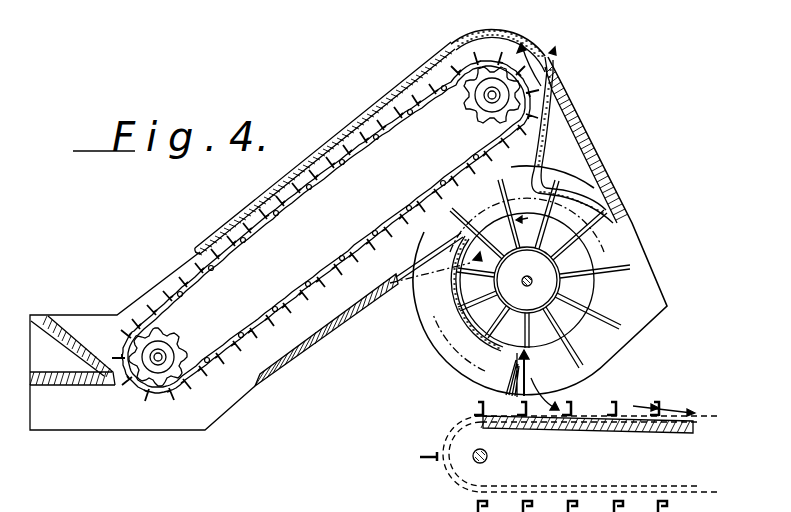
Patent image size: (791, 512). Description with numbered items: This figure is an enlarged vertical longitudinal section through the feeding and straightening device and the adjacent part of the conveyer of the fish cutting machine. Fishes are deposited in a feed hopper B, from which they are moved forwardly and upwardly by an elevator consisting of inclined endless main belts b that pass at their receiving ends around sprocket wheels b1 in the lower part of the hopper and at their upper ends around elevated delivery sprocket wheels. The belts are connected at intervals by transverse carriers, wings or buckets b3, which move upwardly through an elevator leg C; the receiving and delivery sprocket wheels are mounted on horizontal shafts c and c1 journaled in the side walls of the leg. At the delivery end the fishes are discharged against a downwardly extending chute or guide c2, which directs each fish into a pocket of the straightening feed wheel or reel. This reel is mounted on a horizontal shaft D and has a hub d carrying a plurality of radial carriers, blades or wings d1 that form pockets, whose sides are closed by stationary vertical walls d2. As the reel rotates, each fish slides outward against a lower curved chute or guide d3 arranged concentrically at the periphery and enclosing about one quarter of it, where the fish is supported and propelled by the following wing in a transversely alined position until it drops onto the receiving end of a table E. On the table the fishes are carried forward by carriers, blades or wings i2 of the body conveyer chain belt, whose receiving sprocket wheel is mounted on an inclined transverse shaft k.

The elevator leg C is at (348, 121).
The horizontal shaft c1 is at (493, 56).
The downwardly extending chute or guide c2 is at (550, 137).
The inclined endless main belts b is at (268, 241).
The sprocket wheels b1 is at (470, 104).
The transverse horizontal carriers, wings or buckets b3 is at (188, 285).
The horizontal shaft c is at (150, 385).
The feed hopper B is at (142, 341).
The horizontal shaft D is at (527, 280).
The hub d is at (518, 284).
The radial carriers, blades or wings d1 is at (504, 205).
The stationary vertical walls d2 is at (648, 293).
The lower curved chute or guide d3 is at (463, 320).
The carriers, blades or wings i2 is at (571, 407).
The table E is at (683, 435).
The inclined transverse shaft k is at (487, 458).